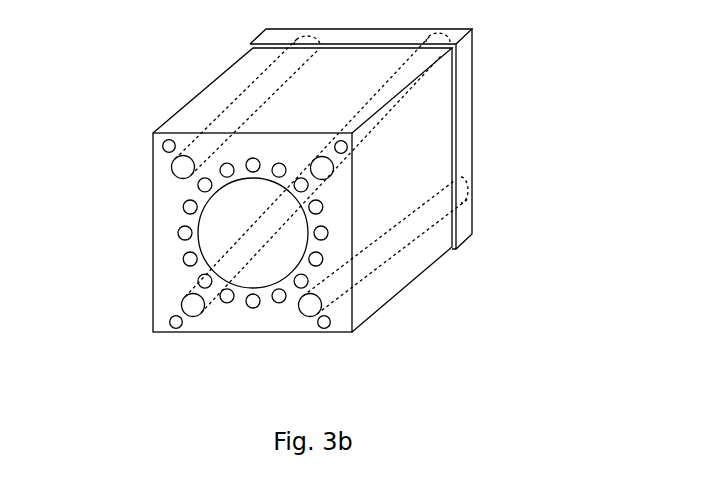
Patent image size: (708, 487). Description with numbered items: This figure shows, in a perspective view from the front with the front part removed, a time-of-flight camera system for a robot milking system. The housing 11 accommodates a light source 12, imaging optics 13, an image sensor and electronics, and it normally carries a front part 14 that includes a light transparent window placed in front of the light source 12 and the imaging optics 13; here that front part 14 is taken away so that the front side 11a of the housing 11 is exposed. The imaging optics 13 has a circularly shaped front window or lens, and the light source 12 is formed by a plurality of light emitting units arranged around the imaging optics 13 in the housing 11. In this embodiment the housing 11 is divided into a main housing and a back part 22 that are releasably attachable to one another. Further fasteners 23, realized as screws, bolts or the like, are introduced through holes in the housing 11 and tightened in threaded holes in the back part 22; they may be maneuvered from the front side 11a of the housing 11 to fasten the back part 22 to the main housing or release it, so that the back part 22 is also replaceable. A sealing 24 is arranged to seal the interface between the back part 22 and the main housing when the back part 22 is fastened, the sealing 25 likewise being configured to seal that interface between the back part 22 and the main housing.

The housing 11 is at (301, 217).
The front side of the housing 11a is at (236, 323).
The light source 12 is at (183, 256).
The imaging optics 13 is at (212, 248).
The front part 14 is at (361, 322).
The back part 22 is at (396, 171).
The further fasteners 23 is at (174, 177).
The sealing 24 is at (456, 205).
The sealing 25 is at (162, 147).